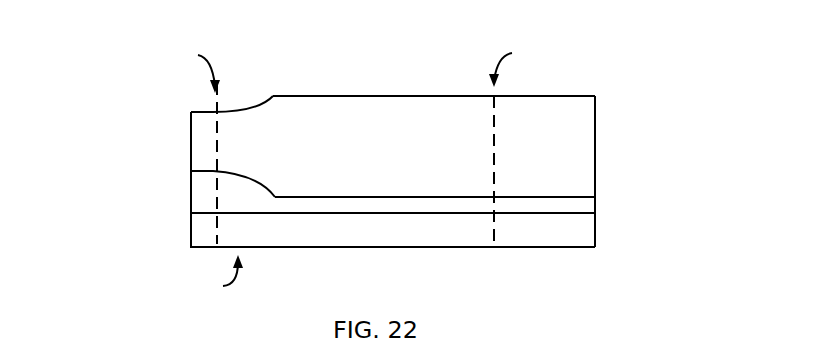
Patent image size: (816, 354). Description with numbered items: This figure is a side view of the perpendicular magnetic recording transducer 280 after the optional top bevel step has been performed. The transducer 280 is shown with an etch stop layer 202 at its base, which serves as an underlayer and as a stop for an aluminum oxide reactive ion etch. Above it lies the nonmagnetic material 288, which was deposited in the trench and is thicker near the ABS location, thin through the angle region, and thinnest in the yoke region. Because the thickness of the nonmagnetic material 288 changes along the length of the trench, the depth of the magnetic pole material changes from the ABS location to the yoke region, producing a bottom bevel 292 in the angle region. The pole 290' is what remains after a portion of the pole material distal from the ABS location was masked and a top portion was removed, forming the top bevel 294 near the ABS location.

The perpendicular magnetic recording transducer 280 is at (397, 38).
The top bevel 294 is at (246, 86).
The bottom bevel 292 is at (243, 205).
The nonmagnetic material 288 is at (598, 204).
The pole 290' is at (628, 159).
The etch stop layer 202 is at (190, 239).